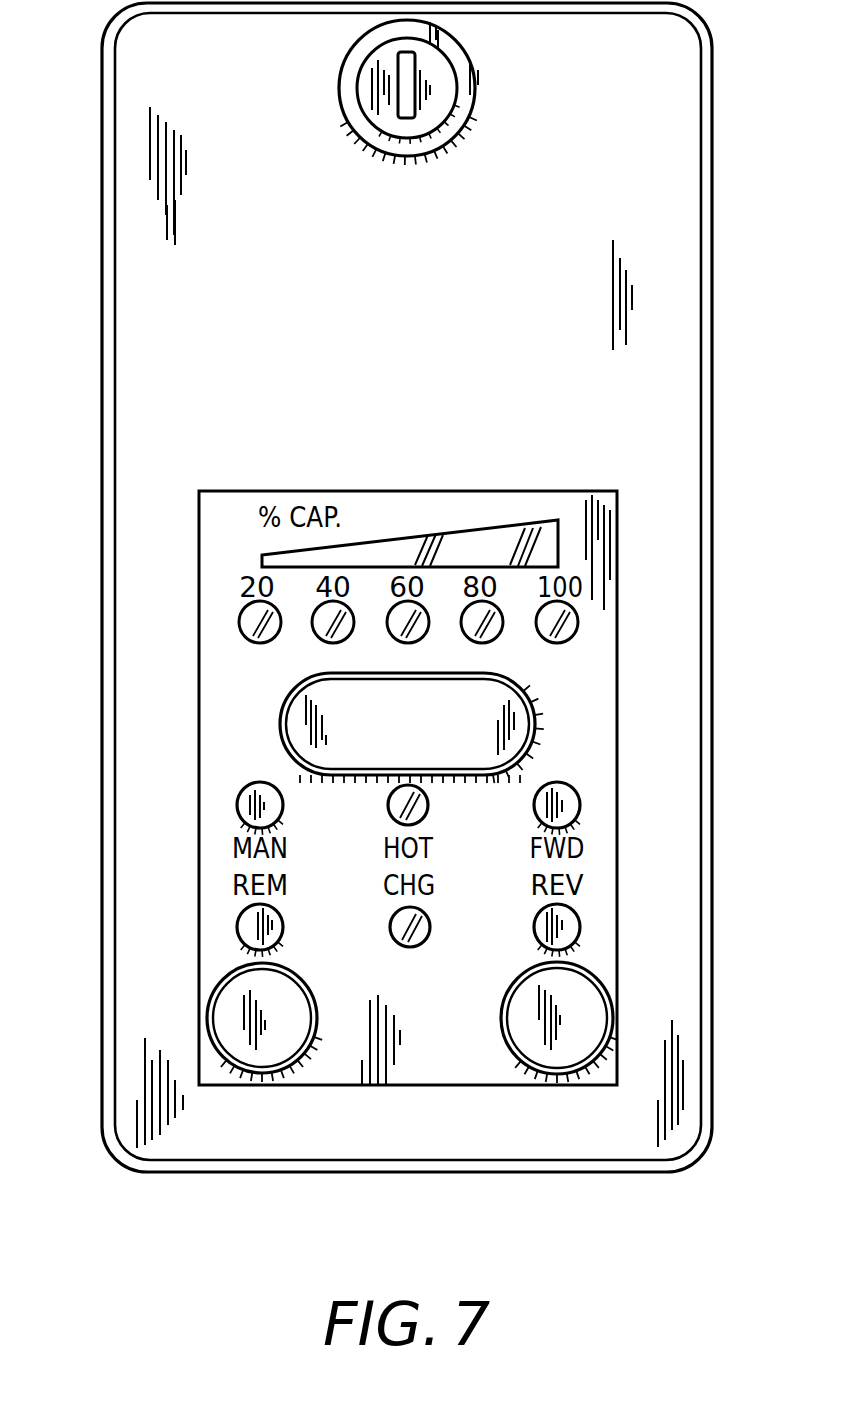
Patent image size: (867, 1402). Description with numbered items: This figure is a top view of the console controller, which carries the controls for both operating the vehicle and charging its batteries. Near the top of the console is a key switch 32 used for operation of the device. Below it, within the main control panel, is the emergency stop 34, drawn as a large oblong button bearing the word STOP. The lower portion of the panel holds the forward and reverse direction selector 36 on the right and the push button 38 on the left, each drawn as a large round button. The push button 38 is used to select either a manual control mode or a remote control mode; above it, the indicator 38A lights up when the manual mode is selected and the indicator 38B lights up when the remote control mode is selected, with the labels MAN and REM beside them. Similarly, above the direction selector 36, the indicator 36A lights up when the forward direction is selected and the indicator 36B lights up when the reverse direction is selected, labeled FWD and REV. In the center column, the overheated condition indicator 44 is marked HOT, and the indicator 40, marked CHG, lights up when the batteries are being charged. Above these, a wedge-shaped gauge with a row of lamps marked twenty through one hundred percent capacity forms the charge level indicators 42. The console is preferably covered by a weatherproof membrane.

The key switch 32 is at (338, 80).
The emergency stop 34 is at (300, 705).
The forward and reverse direction selector 36 is at (590, 1000).
The indicator 36A is at (565, 800).
The indicator 36B is at (565, 918).
The push button 38 is at (228, 1005).
The indicator 38A is at (240, 803).
The indicator 38B is at (240, 914).
The indicator 40 is at (412, 948).
The charge level indicators 42 is at (405, 548).
The overheated condition indicator 44 is at (428, 812).